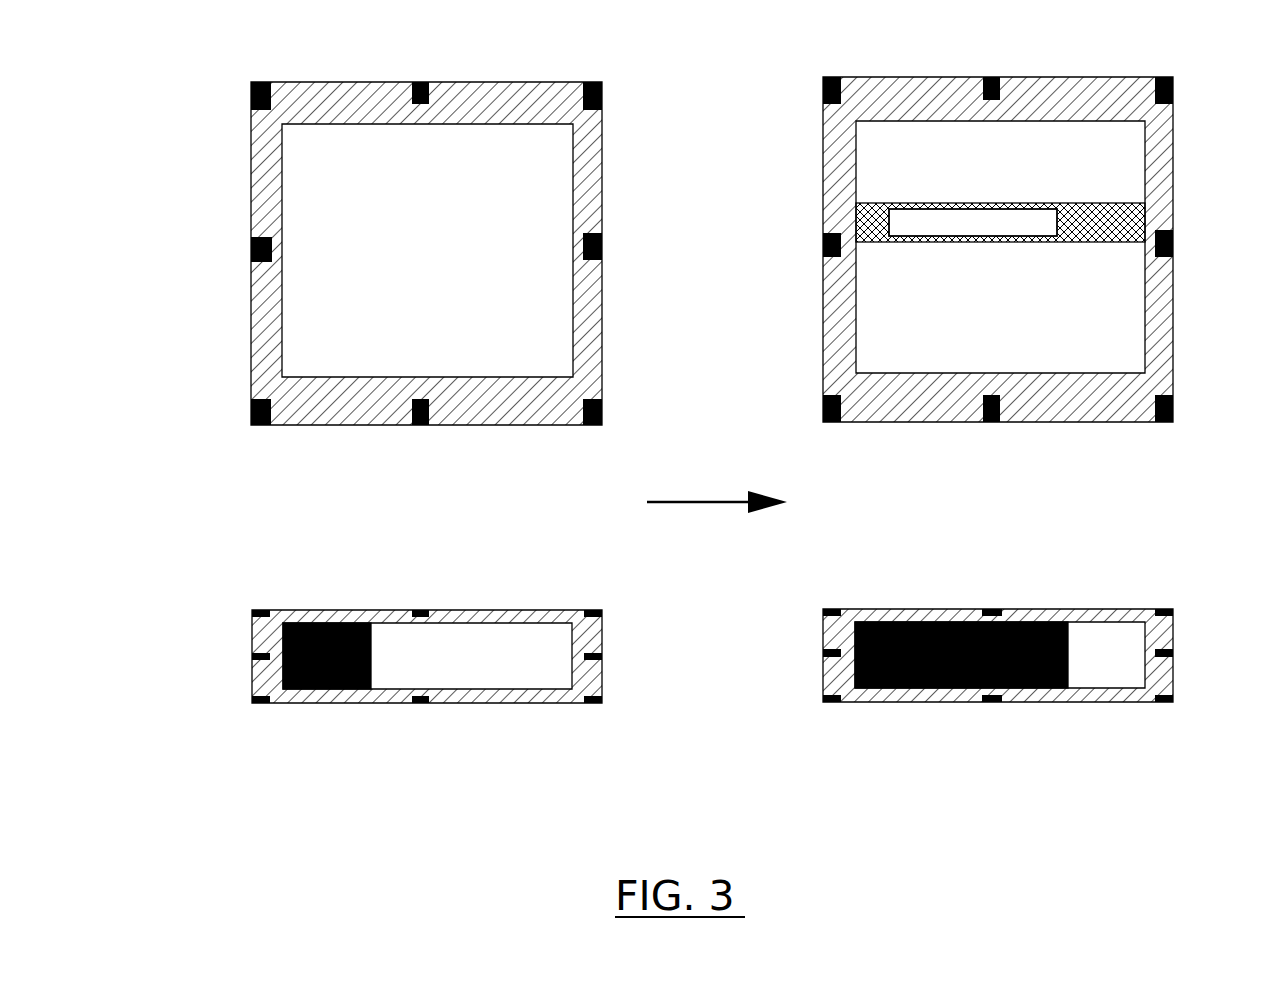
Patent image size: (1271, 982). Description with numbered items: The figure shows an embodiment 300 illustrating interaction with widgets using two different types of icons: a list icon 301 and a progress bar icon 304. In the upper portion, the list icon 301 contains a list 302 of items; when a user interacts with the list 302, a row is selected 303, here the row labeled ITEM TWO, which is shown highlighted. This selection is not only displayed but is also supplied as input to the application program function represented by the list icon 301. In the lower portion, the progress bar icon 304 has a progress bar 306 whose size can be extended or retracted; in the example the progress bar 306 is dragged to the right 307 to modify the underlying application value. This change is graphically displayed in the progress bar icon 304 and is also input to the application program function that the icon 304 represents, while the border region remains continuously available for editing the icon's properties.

The embodiment 300 is at (211, 839).
The list icon 301 is at (680, 233).
The list 302 is at (888, 173).
The selected row 303 is at (1115, 222).
The progress bar icon 304 is at (674, 634).
The progress bar 306 is at (373, 654).
The dragged position of progress bar 307 is at (1077, 662).